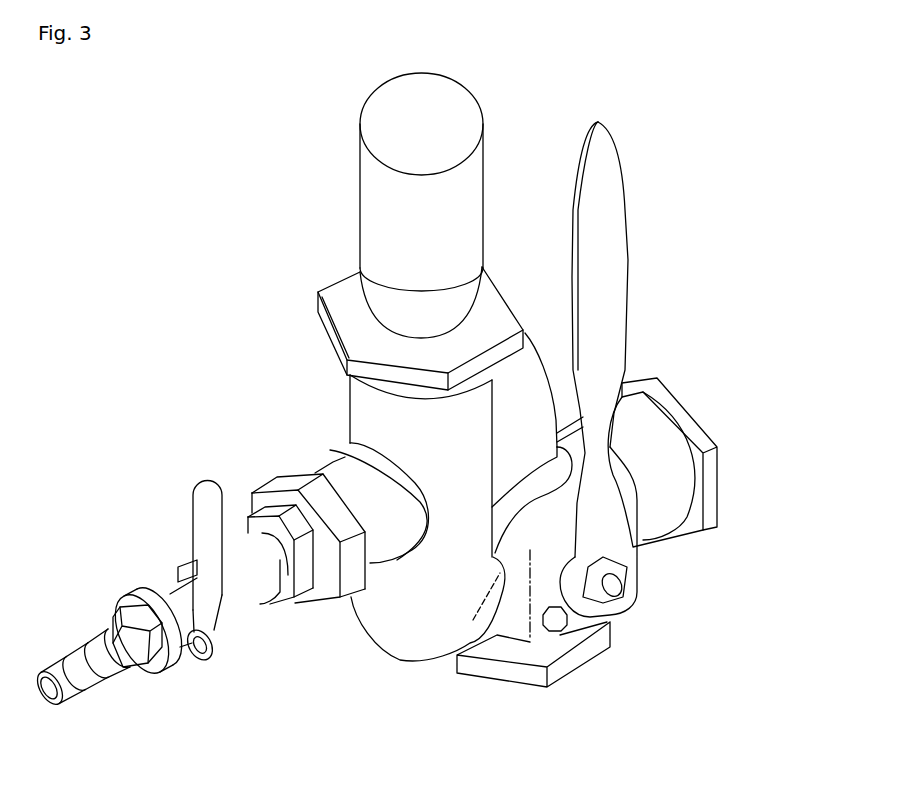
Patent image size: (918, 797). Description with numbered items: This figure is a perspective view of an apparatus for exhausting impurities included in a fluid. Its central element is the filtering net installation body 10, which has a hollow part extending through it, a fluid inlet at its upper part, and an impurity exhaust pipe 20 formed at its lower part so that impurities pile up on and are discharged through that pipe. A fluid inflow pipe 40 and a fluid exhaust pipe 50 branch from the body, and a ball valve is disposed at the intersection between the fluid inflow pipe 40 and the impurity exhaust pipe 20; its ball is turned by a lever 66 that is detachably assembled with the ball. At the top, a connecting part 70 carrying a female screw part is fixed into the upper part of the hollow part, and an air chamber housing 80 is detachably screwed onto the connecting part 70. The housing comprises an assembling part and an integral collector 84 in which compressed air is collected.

The filtering net installation body 10 is at (350, 412).
The impurity exhaust pipe 20 is at (482, 620).
The fluid inflow pipe 40 is at (567, 673).
The fluid exhaust pipe 50 is at (350, 470).
The lever 66 is at (608, 252).
The connecting part 70 is at (340, 298).
The air chamber housing 80 is at (487, 178).
The collector 84 is at (375, 195).